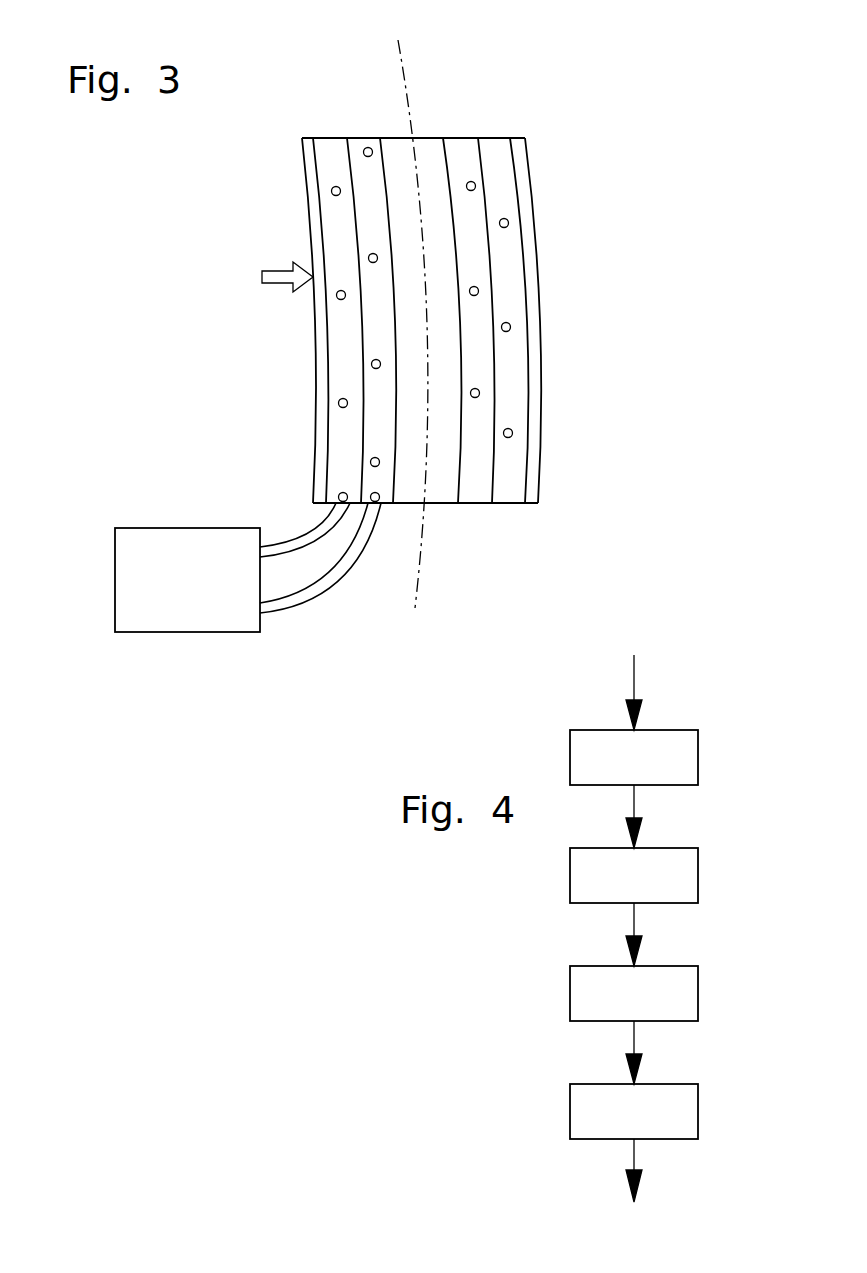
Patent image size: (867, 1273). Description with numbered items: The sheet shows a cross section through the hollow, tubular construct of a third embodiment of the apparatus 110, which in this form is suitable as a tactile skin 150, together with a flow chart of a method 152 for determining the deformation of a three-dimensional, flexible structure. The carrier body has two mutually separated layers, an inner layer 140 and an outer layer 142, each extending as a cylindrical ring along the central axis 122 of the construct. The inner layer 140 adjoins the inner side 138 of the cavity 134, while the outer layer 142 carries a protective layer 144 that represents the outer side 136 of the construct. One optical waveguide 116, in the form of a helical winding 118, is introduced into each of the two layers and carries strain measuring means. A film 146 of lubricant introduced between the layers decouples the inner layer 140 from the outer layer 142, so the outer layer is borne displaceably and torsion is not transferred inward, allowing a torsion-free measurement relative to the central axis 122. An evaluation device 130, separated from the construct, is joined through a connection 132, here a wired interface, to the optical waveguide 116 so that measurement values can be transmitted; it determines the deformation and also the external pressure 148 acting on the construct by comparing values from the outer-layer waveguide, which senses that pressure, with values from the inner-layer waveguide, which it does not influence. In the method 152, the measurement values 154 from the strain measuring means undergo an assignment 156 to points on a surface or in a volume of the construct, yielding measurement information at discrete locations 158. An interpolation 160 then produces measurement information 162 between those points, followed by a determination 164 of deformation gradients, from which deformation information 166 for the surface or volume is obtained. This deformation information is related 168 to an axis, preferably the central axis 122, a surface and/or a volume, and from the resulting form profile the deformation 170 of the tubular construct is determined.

In FIG. 3, the apparatus 110 is at (616, 119).
In FIG. 3, the tactile skin 150 is at (427, 304).
In FIG. 3, the optical waveguide 116 is at (369, 257).
In FIG. 3, the helical winding 118 is at (476, 187).
In FIG. 3, the central axis 122 is at (418, 585).
In FIG. 3, the evaluation device 130 is at (172, 613).
In FIG. 3, the connection 132 is at (308, 540).
In FIG. 3, the cavity 134 is at (438, 492).
In FIG. 3, the outer side 136 is at (313, 418).
In FIG. 3, the inner side 138 is at (393, 478).
In FIG. 3, the inner layer 140 is at (358, 147).
In FIG. 3, the outer layer 142 is at (330, 148).
In FIG. 3, the protective layer 144 is at (307, 135).
In FIG. 3, the film 146 is at (360, 334).
In FIG. 3, the external pressure 148 is at (260, 278).
In FIG. 4, the method 152 is at (716, 683).
In FIG. 4, the measurement values 154 is at (632, 675).
In FIG. 4, the assignment 156 is at (634, 757).
In FIG. 4, the discrete locations 158 is at (638, 800).
In FIG. 4, the interpolation 160 is at (634, 875).
In FIG. 4, the measurement information 162 is at (638, 918).
In FIG. 4, the determination 164 is at (634, 993).
In FIG. 4, the deformation information 166 is at (638, 1036).
In FIG. 4, the relating 168 is at (634, 1111).
In FIG. 4, the deformation 170 is at (632, 1191).